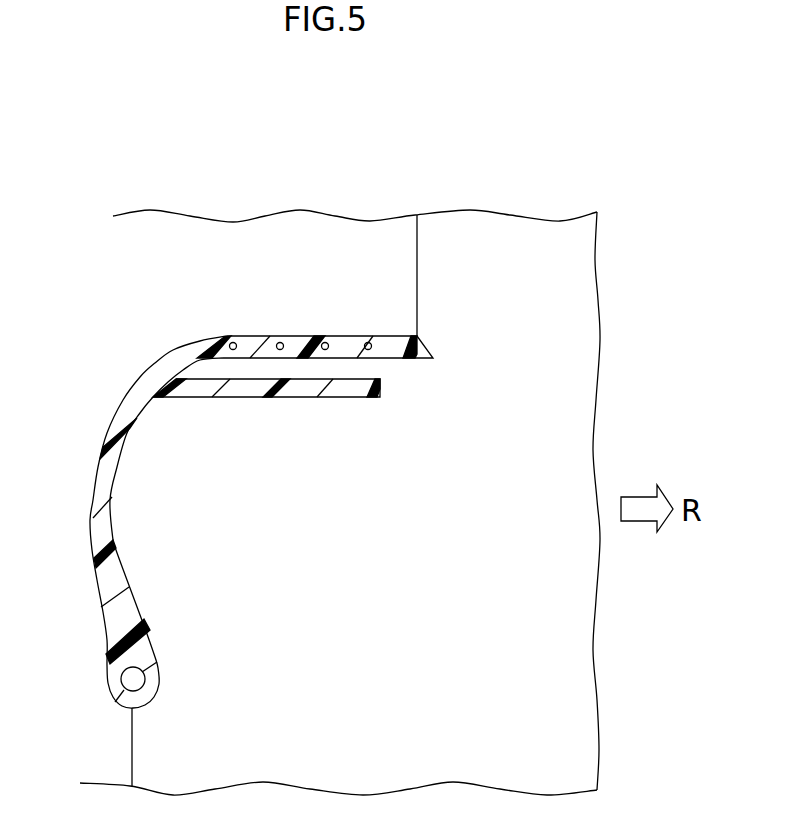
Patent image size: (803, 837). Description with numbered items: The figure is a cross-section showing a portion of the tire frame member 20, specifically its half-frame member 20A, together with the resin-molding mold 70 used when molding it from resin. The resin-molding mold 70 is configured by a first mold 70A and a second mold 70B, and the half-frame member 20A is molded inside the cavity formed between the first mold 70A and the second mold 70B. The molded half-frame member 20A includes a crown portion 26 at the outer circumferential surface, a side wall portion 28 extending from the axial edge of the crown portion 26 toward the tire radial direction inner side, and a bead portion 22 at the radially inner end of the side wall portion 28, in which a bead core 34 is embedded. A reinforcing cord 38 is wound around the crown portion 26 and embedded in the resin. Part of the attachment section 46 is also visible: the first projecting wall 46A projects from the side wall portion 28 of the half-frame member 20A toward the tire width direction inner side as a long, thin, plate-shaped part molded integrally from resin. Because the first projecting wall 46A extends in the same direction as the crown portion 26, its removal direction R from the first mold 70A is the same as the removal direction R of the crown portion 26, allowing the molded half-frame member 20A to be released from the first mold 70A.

The tire frame member 20 is at (144, 489).
The half-frame member 20A is at (141, 376).
The bead portion 22 is at (146, 679).
The crown portion 26 is at (250, 345).
The side wall portion 28 is at (108, 470).
The bead core 34 is at (133, 679).
The reinforcing cord 38 is at (323, 342).
The attachment section 46 is at (335, 388).
The first projecting wall 46A is at (282, 423).
The resin-molding mold 70 is at (340, 437).
The first mold 70A is at (497, 212).
The second mold 70B is at (351, 211).